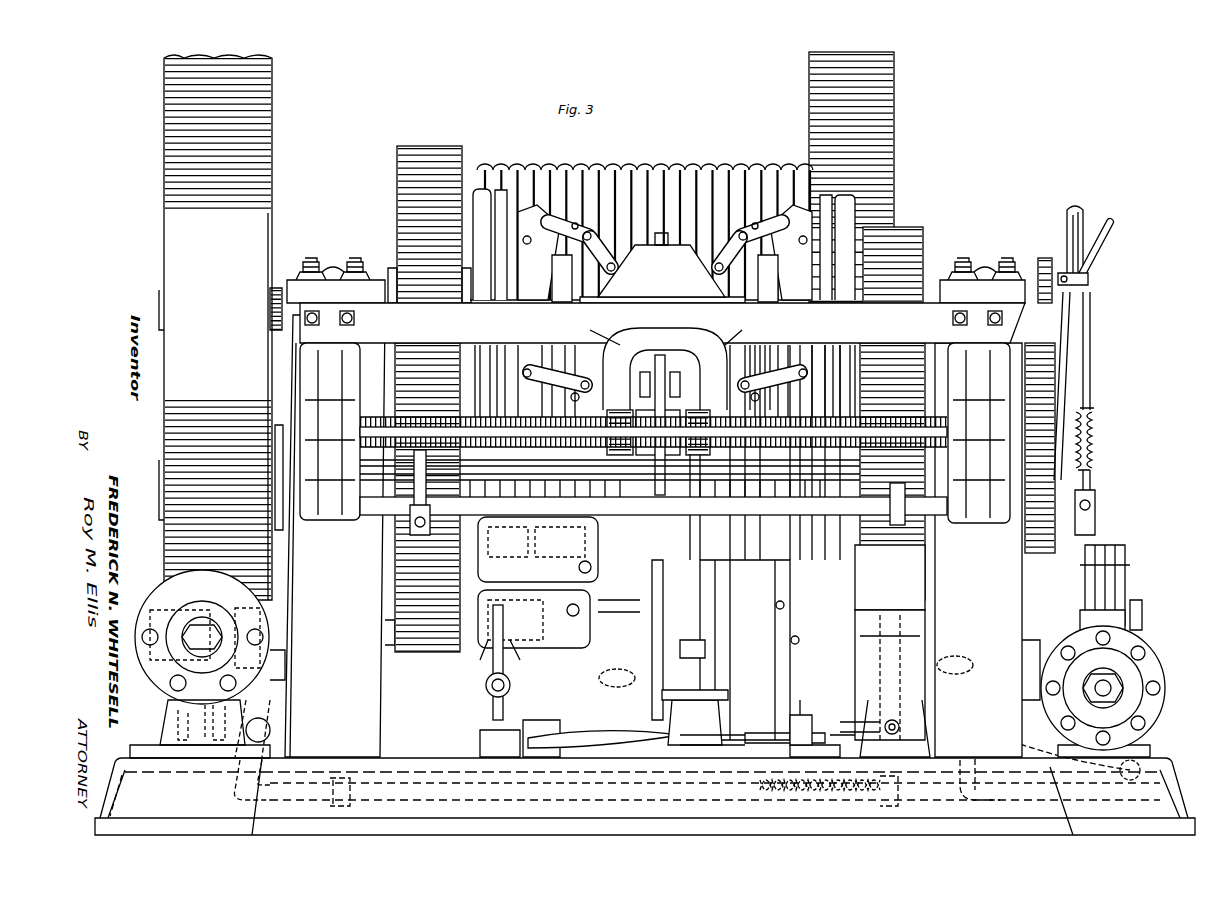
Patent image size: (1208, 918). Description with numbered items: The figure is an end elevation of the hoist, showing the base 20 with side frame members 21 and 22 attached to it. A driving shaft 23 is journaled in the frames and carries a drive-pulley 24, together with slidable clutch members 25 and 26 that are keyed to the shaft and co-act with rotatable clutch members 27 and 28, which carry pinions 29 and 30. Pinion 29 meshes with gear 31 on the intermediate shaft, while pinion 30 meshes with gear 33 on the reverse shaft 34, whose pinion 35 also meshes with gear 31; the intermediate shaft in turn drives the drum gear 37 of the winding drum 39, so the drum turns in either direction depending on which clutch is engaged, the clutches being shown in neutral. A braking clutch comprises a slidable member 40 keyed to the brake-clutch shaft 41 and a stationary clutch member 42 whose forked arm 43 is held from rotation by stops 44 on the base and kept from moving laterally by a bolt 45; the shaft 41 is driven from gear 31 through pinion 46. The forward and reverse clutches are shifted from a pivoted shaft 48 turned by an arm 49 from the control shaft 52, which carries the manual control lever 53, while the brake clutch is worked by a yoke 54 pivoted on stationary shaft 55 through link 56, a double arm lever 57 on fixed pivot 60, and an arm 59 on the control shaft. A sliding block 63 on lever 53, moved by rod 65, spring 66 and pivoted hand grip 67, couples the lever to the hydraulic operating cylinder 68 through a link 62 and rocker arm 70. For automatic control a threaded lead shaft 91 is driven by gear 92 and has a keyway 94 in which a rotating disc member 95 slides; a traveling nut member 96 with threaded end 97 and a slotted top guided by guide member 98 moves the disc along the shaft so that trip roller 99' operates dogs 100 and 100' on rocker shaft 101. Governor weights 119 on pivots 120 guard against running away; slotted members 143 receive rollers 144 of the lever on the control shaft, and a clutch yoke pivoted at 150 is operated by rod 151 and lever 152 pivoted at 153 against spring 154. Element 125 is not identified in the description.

The base 20 is at (645, 796).
The side frame member 21 is at (978, 550).
The side frame member 22 is at (332, 536).
The driving shaft 23 is at (278, 288).
The drive-pulley 24 is at (265, 120).
The slidable clutch member 25 is at (566, 253).
The slidable clutch member 26 is at (763, 253).
The rotatable clutch member 27 is at (490, 244).
The rotatable clutch member 28 is at (840, 207).
The pinion 29 is at (393, 270).
The pinion 30 is at (905, 225).
The gear 31 is at (396, 158).
The gear 33 is at (905, 468).
The reverse shaft 34 is at (850, 498).
The pinion 35 is at (400, 495).
The drum gear 37 is at (892, 128).
The winding drum 39 is at (670, 168).
The slidable member 40 is at (665, 542).
The brake-clutch shaft 41 is at (620, 590).
The stationary clutch member 42 is at (875, 675).
The arm 43 is at (925, 640).
The stops 44 is at (898, 724).
The bolt 45 is at (895, 726).
The pinion 46 is at (432, 652).
The pivoted shaft 48 is at (660, 245).
The arm 49 is at (601, 738).
The control shaft 52 is at (545, 612).
The manual control lever 53 is at (1070, 322).
The yoke 54 is at (692, 649).
The stationary shaft 55 is at (698, 713).
The link 56 is at (728, 730).
The double arm lever 57 is at (808, 746).
The arm 59 is at (955, 665).
The fixed pivot 60 is at (795, 706).
The link 62 is at (1108, 545).
The sliding block 63 is at (1096, 496).
The rod 65 is at (1092, 362).
The spring 66 is at (1094, 440).
The pivoted hand grip 67 is at (1094, 222).
The operating cylinder 68 is at (1140, 652).
The rocker arm 70 is at (1122, 588).
The threaded lead shaft 91 is at (358, 425).
The gear 92 is at (1052, 390).
The keyway 94 is at (930, 430).
The rotating disc member 95 is at (643, 387).
The threaded traveling nut member 96 is at (665, 369).
The threaded end 97 is at (660, 425).
The guide member 98 is at (955, 296).
The trip roller 99' is at (738, 330).
The dog 100 is at (386, 506).
The dog 100' is at (910, 529).
The rocker shaft 101 is at (870, 530).
The adjustable governor weights 119 is at (511, 642).
The pivots 120 is at (585, 607).
The flange 125 is at (250, 675).
The slotted members 143 is at (200, 729).
The rollers 144 is at (219, 725).
The pivot 150 is at (270, 731).
The rod 151 is at (635, 794).
The lever 152 is at (1050, 783).
The pivot 153 is at (982, 712).
The spring 154 is at (830, 808).